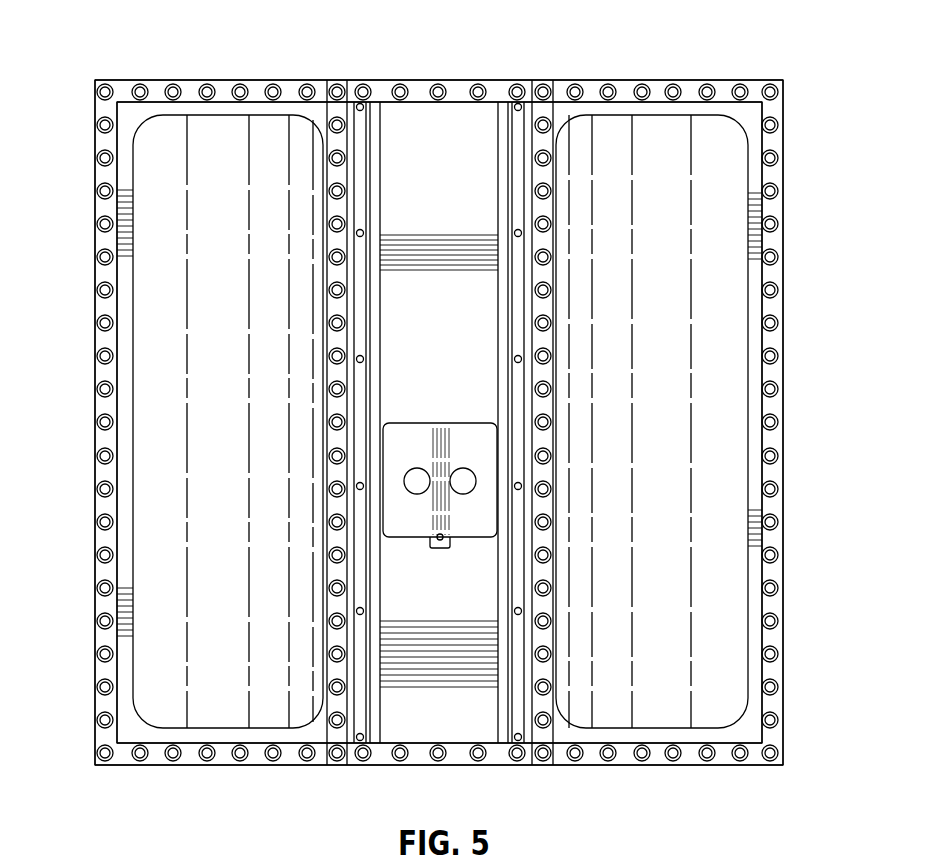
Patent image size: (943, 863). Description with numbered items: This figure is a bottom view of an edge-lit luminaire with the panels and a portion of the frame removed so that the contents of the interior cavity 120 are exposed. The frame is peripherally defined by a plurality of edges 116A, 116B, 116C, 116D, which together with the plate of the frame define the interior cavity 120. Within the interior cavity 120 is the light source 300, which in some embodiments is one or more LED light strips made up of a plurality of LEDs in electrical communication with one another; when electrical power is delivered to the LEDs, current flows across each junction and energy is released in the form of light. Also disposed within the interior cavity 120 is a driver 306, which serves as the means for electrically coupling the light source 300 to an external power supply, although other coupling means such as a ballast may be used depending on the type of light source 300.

The light source 300 is at (440, 422).
The edge 116A is at (97, 420).
The edge 116B is at (778, 422).
The edge 116C is at (424, 80).
The edge 116D is at (337, 765).
The interior cavity 120 is at (222, 600).
The driver 306 is at (455, 458).